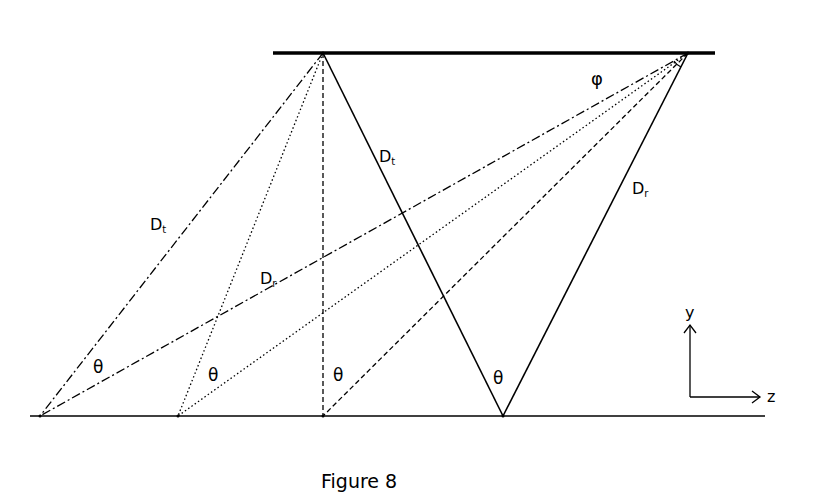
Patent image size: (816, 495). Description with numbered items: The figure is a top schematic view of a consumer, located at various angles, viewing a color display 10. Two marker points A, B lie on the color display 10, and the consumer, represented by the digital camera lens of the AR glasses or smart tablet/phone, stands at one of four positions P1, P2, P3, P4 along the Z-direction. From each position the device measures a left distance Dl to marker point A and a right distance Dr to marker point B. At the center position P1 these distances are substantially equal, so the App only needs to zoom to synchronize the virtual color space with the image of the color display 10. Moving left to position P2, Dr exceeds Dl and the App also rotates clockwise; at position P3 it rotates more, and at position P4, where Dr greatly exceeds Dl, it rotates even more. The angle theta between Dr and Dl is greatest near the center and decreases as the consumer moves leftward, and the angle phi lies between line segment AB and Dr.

The color display 10 is at (298, 52).
The marker point A is at (271, 218).
The marker point B is at (367, 218).
The position P1 is at (511, 430).
The position P2 is at (321, 431).
The position P3 is at (187, 430).
The position P4 is at (50, 430).